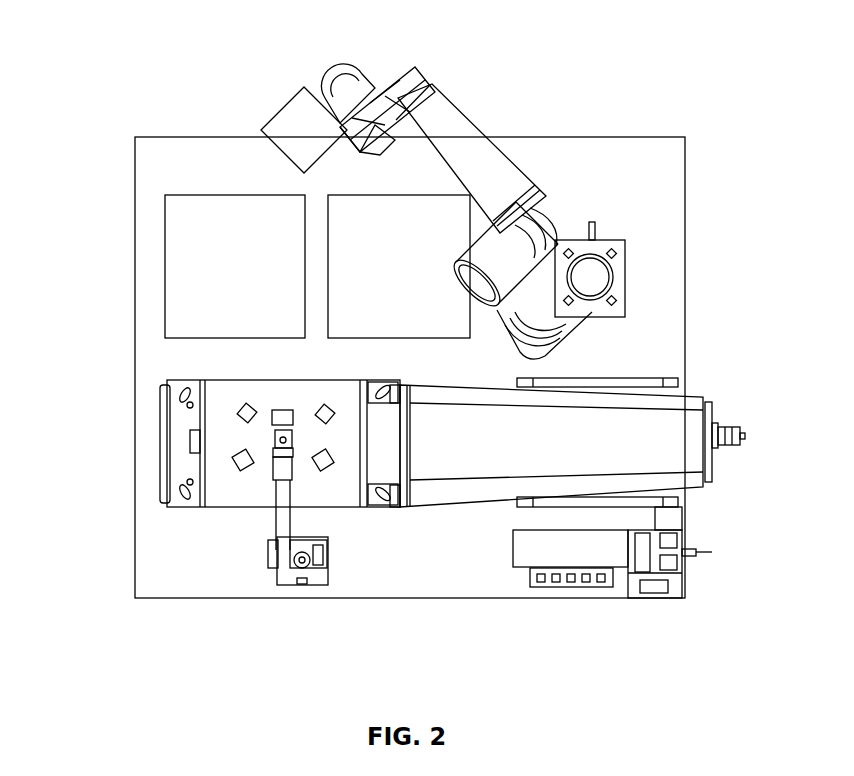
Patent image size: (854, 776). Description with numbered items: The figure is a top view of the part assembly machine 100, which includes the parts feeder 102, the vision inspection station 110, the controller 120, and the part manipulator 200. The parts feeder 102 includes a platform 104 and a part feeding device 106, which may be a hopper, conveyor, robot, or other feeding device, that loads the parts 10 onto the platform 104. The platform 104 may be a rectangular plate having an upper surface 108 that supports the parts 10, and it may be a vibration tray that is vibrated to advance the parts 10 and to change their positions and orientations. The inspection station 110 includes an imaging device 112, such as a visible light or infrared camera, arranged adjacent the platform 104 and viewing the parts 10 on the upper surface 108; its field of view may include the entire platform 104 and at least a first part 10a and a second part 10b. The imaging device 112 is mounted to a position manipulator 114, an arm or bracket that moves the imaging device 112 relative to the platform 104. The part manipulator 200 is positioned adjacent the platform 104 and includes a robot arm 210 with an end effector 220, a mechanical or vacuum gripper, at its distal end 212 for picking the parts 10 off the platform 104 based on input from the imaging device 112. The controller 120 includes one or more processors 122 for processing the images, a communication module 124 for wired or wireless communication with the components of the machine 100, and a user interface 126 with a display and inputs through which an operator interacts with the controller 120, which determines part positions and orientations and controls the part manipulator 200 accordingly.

The part assembly machine 100 is at (551, 74).
The part manipulator 200 is at (538, 195).
The robot arm 210 is at (448, 137).
The distal end 212 is at (327, 83).
The end effector 220 is at (280, 107).
The parts feeder 102 is at (577, 422).
The part feeding device 106 is at (642, 420).
The upper surface 108 is at (221, 506).
The platform 104 is at (238, 506).
The vision inspection station 110 is at (222, 442).
The first part 10a is at (234, 408).
The second part 10b is at (232, 460).
The parts 10 is at (321, 478).
The position manipulator 114 is at (280, 522).
The imaging device 112 is at (293, 590).
The processor 122 is at (673, 532).
The controller 120 is at (688, 538).
The communication module 124 is at (679, 563).
The user interface 126 is at (518, 577).